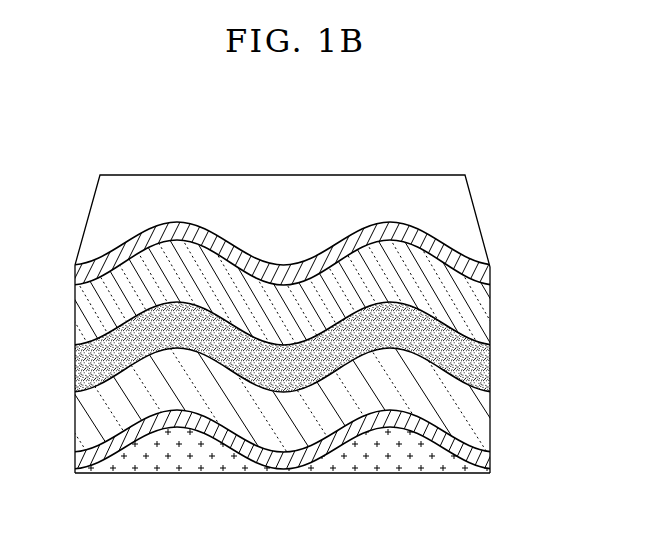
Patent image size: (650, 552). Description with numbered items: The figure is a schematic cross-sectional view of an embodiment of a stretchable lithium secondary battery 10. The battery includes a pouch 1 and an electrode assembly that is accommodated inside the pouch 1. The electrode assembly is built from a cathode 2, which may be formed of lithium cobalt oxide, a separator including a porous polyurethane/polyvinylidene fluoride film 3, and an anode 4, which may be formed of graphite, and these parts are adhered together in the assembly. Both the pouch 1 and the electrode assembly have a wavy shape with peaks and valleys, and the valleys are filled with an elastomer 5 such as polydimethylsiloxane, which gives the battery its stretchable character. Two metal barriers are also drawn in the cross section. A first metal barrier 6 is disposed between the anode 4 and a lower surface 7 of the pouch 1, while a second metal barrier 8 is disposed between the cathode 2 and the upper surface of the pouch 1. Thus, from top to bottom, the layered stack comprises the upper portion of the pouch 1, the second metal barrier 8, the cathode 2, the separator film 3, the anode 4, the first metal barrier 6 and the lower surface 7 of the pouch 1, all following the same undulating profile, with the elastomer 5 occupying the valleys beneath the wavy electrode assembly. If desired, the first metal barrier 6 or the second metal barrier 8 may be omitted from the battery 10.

The stretchable lithium secondary battery 10 is at (488, 146).
The pouch 1 is at (462, 217).
The second metal barrier 8 is at (477, 275).
The cathode 2 is at (477, 318).
The separator 3 is at (480, 370).
The anode 4 is at (480, 423).
The first metal barrier 6 is at (480, 452).
The elastomer 5 is at (430, 465).
The lower surface 7 is at (490, 464).